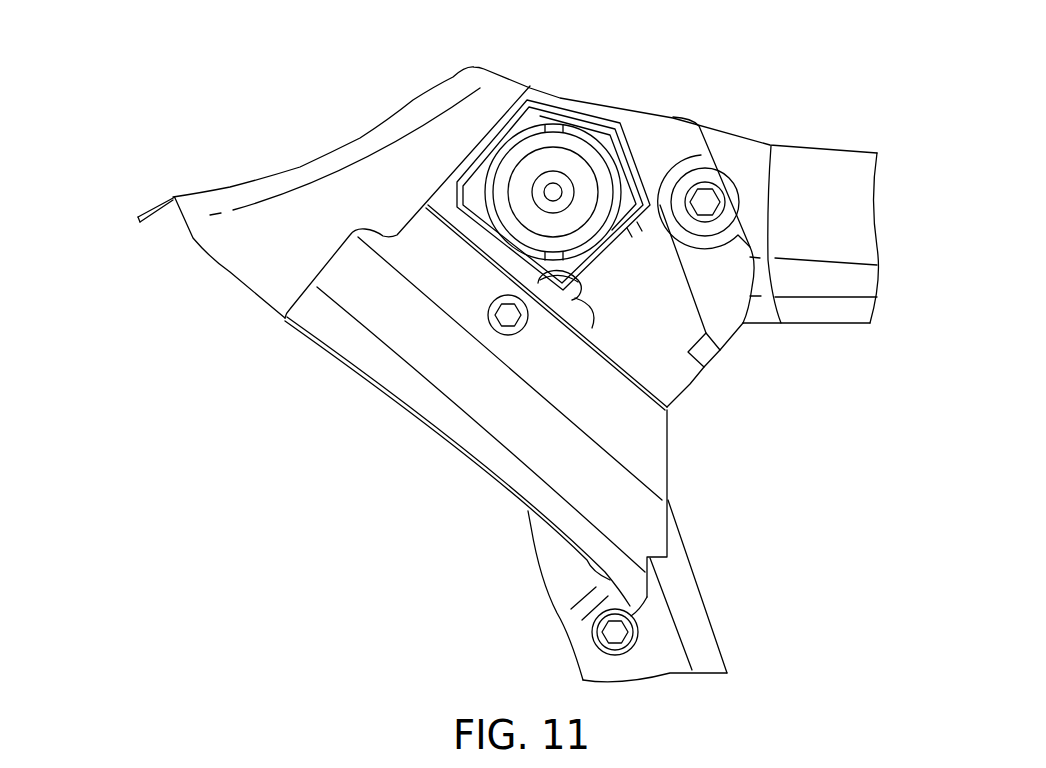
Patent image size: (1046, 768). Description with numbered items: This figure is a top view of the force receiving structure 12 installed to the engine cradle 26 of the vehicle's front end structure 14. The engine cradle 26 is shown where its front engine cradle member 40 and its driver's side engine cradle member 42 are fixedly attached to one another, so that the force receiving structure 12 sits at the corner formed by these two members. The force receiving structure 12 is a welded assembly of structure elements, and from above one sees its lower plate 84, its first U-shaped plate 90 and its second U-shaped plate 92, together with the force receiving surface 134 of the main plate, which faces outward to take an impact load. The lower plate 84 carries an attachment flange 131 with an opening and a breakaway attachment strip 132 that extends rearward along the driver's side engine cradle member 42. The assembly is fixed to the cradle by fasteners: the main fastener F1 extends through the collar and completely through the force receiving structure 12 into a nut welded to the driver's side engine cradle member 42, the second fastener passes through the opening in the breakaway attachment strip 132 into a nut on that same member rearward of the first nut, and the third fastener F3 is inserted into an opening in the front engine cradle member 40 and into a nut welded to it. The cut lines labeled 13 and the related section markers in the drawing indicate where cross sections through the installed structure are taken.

The force receiving structure 12 is at (421, 90).
The section line 13 is at (228, 313).
The front end structure 14 is at (538, 632).
The engine cradle 26 is at (797, 143).
The front engine cradle member 40 is at (825, 192).
The driver's side engine cradle member 42 is at (687, 598).
The lower plate 84 is at (657, 144).
The first U-shaped plate 90 is at (578, 283).
The second U-shaped plate 92 is at (575, 138).
The attachment flange 131 is at (701, 158).
The breakaway attachment strip 132 is at (567, 580).
The force receiving surface 134 is at (360, 138).
The main fastener F1 is at (508, 316).
The third fastener F3 is at (706, 203).